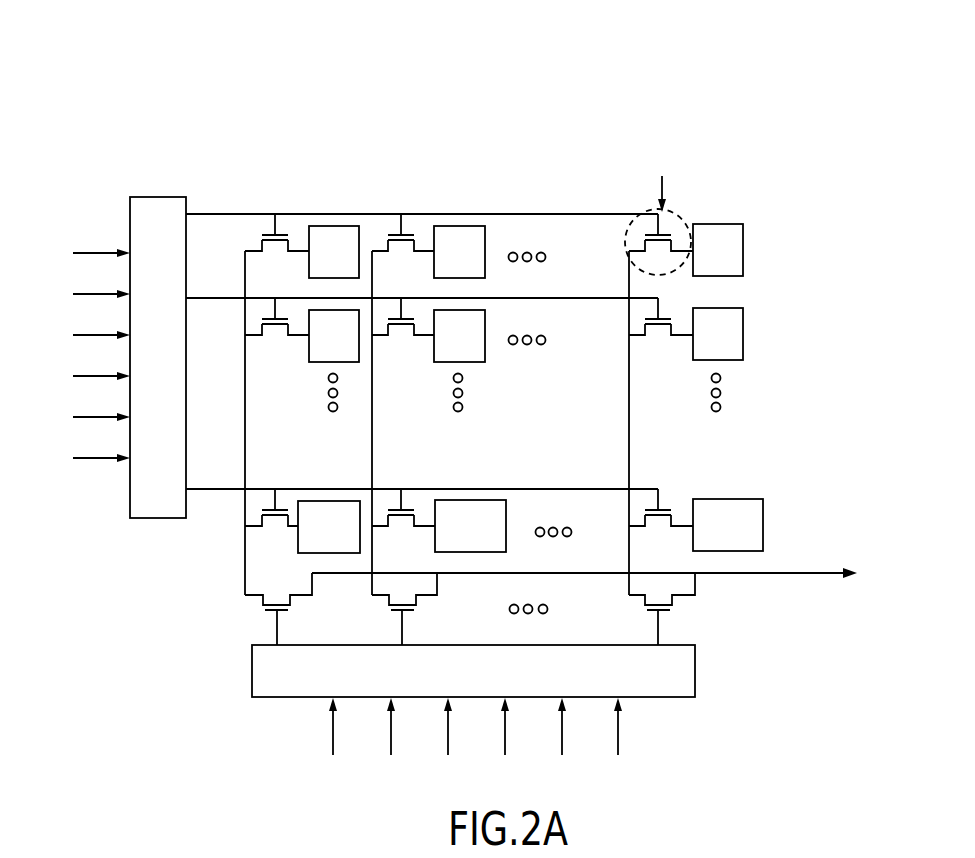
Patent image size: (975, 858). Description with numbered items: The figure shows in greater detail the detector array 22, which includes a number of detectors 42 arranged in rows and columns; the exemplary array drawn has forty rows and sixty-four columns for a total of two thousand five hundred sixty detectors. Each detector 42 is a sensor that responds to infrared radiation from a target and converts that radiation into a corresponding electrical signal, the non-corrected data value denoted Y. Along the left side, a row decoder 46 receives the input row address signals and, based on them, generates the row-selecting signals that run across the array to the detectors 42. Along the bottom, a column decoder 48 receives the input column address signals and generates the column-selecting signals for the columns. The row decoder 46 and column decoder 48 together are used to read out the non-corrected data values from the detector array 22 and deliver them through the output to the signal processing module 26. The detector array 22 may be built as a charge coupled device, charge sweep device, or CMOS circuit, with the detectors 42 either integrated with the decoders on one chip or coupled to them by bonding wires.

The detector array 22 is at (522, 136).
The detector 42 is at (333, 212).
The row decoder 46 is at (160, 186).
The column decoder 48 is at (588, 679).
The signal processing module 26 is at (584, 615).